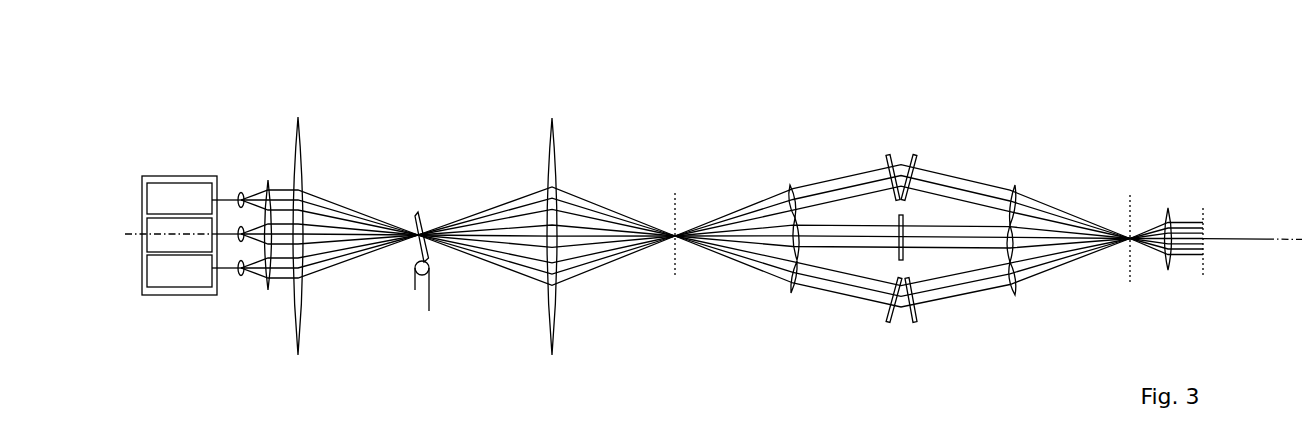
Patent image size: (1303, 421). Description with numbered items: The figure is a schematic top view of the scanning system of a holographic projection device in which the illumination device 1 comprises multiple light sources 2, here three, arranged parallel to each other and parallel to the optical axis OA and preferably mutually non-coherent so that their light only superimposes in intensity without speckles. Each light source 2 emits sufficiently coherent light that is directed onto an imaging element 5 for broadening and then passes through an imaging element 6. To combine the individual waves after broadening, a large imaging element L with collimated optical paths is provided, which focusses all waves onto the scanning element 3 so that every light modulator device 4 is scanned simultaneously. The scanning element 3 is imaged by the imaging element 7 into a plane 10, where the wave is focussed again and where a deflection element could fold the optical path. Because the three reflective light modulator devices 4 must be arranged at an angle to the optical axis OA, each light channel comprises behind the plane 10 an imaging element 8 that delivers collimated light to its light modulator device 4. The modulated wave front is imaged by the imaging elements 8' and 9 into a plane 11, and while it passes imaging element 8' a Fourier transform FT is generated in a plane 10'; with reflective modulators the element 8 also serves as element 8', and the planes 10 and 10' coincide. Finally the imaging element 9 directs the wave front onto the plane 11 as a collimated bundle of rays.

The illumination device 1 is at (152, 177).
The light source 2 is at (187, 268).
The scanning element 3 is at (421, 289).
The light modulator device 4 is at (898, 277).
The imaging element 5 is at (239, 241).
The imaging element 6 is at (268, 180).
The imaging element 7 is at (552, 118).
The imaging element 8 is at (774, 197).
The imaging element 8' is at (1039, 194).
The imaging element 9 is at (1168, 208).
The plane 10 is at (697, 171).
The plane 10' is at (1111, 173).
The plane 11 is at (1205, 208).
The large imaging element L is at (300, 124).
The Fourier transform FT is at (1130, 310).
The optical axis OA is at (1240, 240).